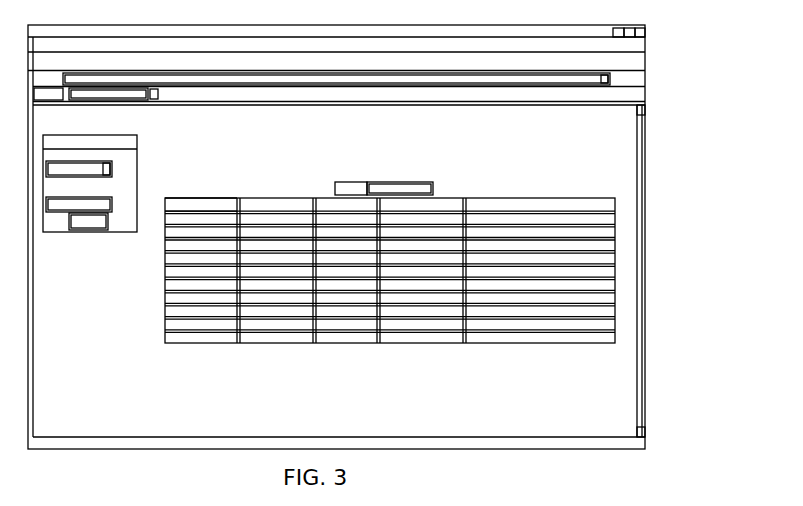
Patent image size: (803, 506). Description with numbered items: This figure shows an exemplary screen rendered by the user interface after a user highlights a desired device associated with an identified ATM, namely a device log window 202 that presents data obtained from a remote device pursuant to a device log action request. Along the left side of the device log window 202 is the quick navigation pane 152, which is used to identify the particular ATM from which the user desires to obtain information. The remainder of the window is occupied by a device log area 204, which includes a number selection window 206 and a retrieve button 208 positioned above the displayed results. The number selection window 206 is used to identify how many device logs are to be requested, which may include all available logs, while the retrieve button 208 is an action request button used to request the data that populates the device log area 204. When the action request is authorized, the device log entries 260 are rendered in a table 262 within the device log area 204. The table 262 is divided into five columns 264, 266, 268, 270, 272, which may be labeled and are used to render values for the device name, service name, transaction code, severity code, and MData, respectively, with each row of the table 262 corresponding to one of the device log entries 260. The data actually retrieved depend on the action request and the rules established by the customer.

The quick navigation pane 152 is at (146, 135).
The device log window 202 is at (620, 21).
The device log area 204 is at (539, 146).
The number selection window 206 is at (366, 182).
The retrieve button 208 is at (425, 182).
The device log entries 260 is at (165, 258).
The table 262 is at (208, 367).
The column 264 is at (170, 198).
The column 266 is at (258, 198).
The column 268 is at (315, 198).
The column 270 is at (463, 198).
The column 272 is at (581, 198).